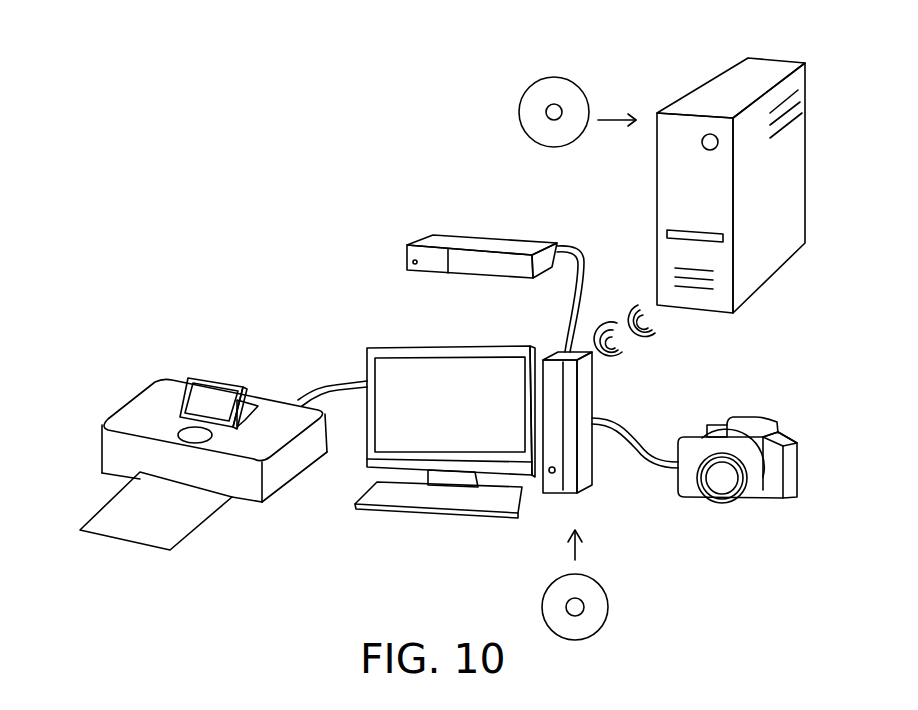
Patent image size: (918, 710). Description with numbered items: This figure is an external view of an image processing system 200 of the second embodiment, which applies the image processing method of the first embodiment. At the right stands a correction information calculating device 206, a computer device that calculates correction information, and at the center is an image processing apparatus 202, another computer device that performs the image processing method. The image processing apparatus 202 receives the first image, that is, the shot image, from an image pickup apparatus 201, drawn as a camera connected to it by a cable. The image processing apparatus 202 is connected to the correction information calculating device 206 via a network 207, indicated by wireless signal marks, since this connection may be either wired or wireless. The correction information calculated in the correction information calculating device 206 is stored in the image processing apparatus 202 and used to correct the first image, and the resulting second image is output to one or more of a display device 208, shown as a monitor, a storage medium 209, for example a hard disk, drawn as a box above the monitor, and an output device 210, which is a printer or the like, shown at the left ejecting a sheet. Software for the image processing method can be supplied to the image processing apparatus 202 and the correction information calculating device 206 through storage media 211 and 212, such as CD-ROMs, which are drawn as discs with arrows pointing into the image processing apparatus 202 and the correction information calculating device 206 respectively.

The image processing system 200 is at (698, 46).
The image pickup apparatus 201 is at (757, 417).
The image processing apparatus 202 is at (582, 493).
The correction information calculating device 206 is at (657, 235).
The network 207 is at (642, 350).
The display device 208 is at (387, 348).
The storage medium 209 is at (483, 240).
The output device 210 is at (177, 380).
The storage medium 211 is at (610, 607).
The storage medium 212 is at (520, 110).